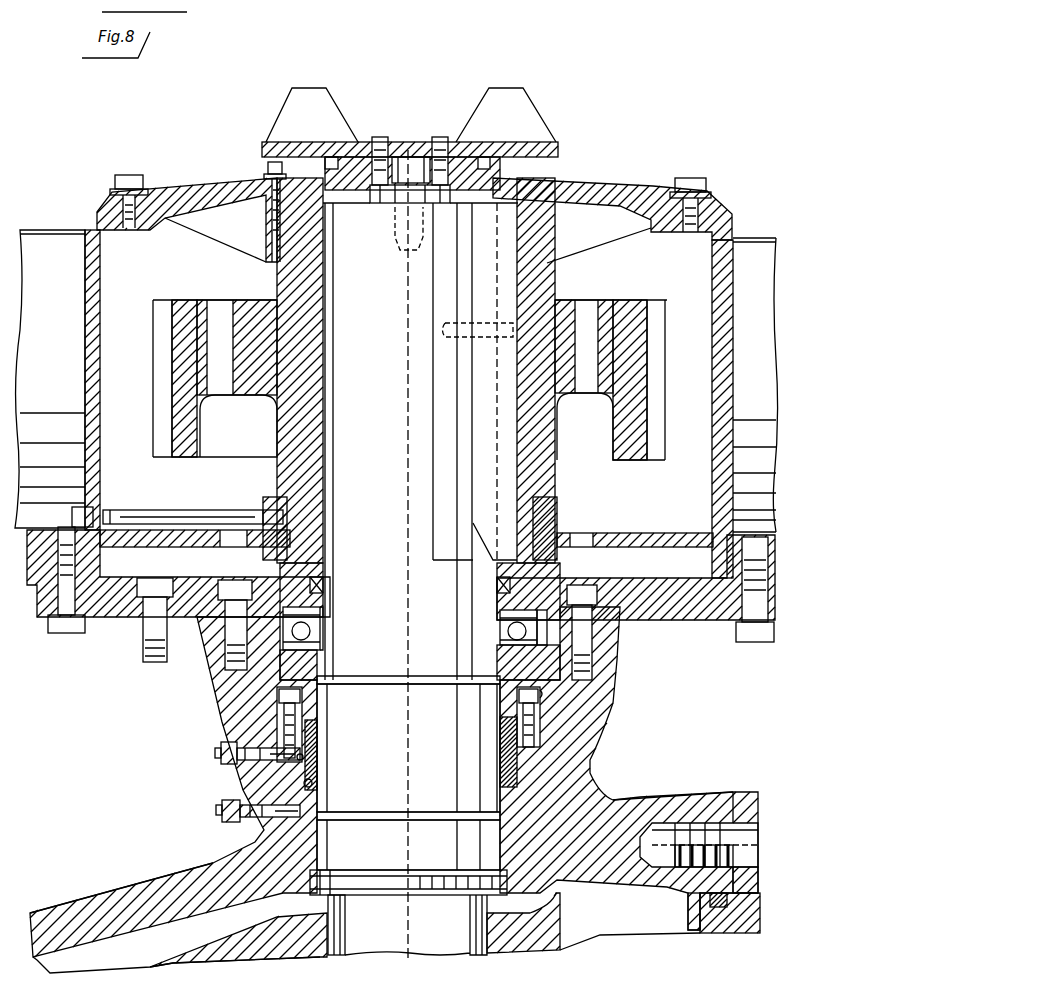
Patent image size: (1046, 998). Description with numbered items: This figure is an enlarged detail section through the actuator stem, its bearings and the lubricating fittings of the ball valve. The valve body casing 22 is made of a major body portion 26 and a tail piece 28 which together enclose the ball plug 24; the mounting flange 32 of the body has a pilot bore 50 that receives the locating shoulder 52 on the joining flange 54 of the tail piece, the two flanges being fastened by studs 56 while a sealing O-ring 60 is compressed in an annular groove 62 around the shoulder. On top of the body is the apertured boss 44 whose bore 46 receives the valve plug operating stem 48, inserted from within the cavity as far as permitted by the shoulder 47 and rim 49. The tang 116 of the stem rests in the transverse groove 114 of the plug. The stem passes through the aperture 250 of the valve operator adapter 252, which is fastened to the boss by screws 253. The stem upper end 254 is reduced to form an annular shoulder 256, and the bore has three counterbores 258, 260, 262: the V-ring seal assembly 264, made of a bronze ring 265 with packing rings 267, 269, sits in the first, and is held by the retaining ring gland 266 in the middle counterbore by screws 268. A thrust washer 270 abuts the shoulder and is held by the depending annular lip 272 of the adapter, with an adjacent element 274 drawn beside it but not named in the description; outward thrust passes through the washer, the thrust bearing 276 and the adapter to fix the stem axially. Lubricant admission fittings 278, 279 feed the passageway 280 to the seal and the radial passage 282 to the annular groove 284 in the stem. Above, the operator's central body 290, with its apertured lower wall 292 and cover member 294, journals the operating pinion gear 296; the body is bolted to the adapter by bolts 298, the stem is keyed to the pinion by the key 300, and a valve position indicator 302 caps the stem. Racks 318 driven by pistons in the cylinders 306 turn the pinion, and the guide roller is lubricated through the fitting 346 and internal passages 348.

The valve body casing 22 is at (136, 892).
The ball plug 24 is at (234, 958).
The major body portion 26 is at (80, 905).
The tail piece 28 is at (748, 925).
The mounting flange 32 is at (700, 795).
The apertured boss 44 is at (592, 710).
The bore 46 is at (550, 817).
The shoulder 47 is at (330, 868).
The valve plug operating stem 48 is at (418, 563).
The rim 49 is at (372, 885).
The pilot bore 50 is at (693, 900).
The locating shoulder 52 is at (758, 862).
The joining flange 54 is at (745, 795).
The studs 56 is at (755, 835).
The sealing O-ring 60 is at (703, 930).
The annular groove 62 is at (758, 882).
The transverse groove 114 is at (321, 958).
The tang 116 is at (384, 958).
The aperture 250 is at (496, 585).
The valve operator adapter 252 is at (684, 618).
The screws 253 is at (226, 634).
The stem upper end 254 is at (320, 426).
The annular shoulder 256 is at (332, 678).
The counterbore 258 is at (538, 727).
The middle counterbore 260 is at (543, 694).
The counterbore 262 is at (538, 627).
The V-ring seal assembly 264 is at (500, 750).
The bronze ring 265 is at (320, 760).
The retaining ring gland 266 is at (497, 710).
The packing ring 267 is at (318, 733).
The screws 268 is at (277, 697).
The packing ring 269 is at (318, 783).
The thrust washer 270 is at (318, 645).
The depending annular lip 272 is at (262, 618).
The seal 274 is at (318, 610).
The thrust bearing 276 is at (320, 630).
The lubricant admission fitting 278 is at (235, 760).
The lubricant admission fitting 279 is at (238, 818).
The passageway 280 is at (294, 760).
The radial passage 282 is at (303, 819).
The annular groove 284 is at (353, 818).
The central body 290 is at (713, 474).
The apertured lower wall 292 is at (648, 534).
The cover member 294 is at (612, 182).
The operating pinion gear 296 is at (622, 302).
The bolts 298 is at (755, 642).
The key 300 is at (493, 412).
The valve position indicator 302 is at (543, 123).
The cylinder 306 is at (752, 240).
The rack 318 is at (196, 512).
The fitting 346 is at (266, 166).
The internal passages 348 is at (271, 214).